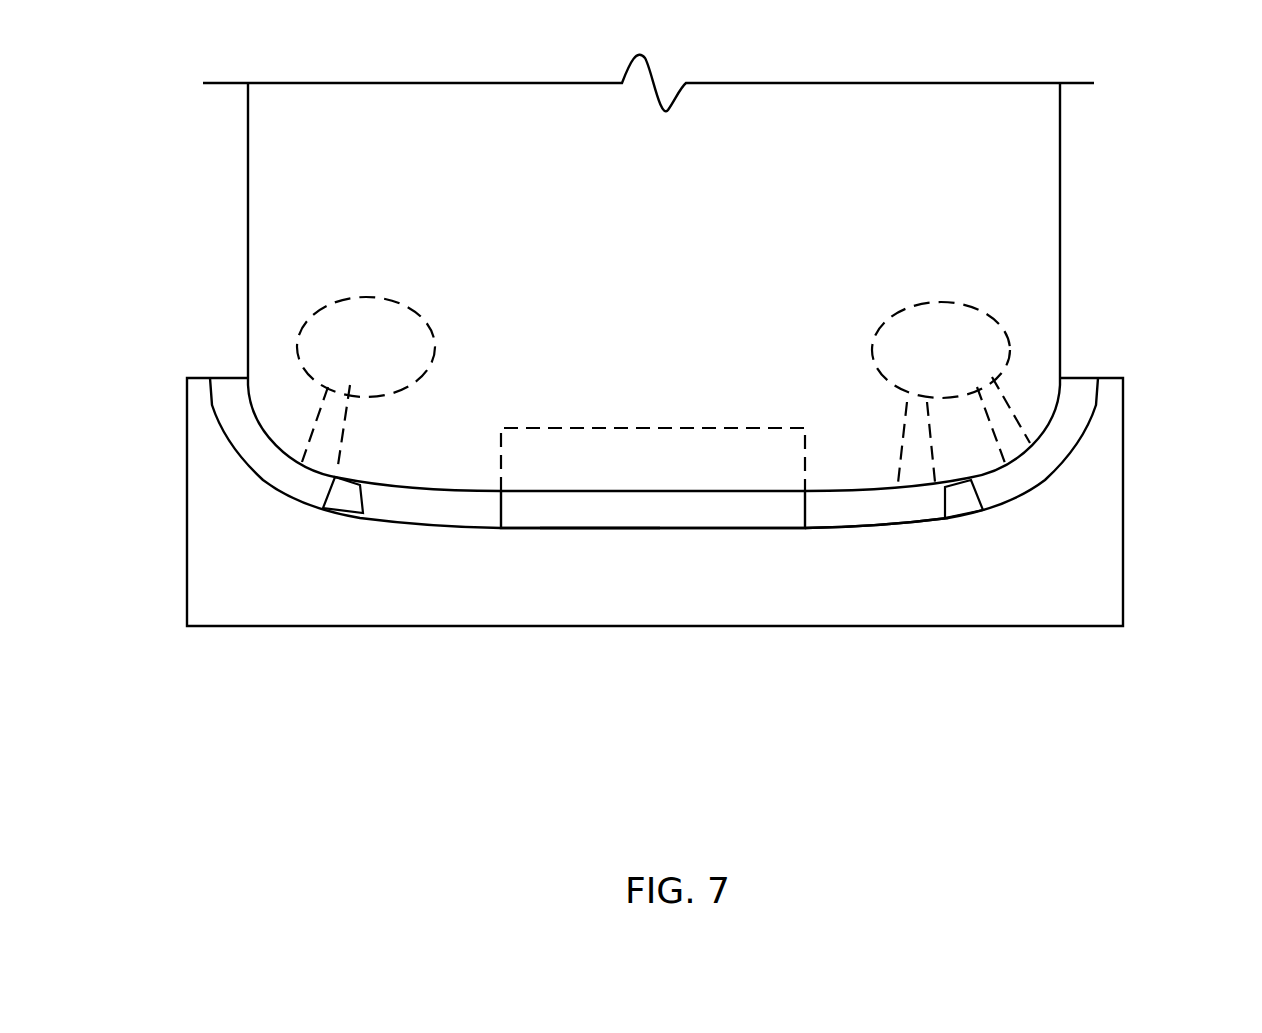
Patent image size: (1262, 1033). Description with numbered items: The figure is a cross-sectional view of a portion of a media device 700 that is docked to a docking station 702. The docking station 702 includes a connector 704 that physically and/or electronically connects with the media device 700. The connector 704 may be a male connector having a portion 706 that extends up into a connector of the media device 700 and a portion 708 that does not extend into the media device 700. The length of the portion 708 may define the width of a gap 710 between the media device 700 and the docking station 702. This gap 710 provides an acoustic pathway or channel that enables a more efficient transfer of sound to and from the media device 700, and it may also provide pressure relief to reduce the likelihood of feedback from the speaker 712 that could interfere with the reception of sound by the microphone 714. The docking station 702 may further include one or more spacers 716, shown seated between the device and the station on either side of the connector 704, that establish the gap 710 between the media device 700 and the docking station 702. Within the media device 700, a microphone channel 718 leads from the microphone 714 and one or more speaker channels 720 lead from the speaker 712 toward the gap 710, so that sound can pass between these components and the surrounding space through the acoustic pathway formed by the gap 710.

The media device 700 is at (1050, 175).
The docking station 702 is at (1115, 510).
The connector 704 is at (705, 523).
The portion 706 is at (627, 433).
The portion 708 is at (603, 522).
The gap 710 is at (872, 522).
The speaker 712 is at (888, 345).
The microphone 714 is at (417, 345).
The spacers 716 is at (342, 512).
The microphone channel 718 is at (338, 432).
The speaker channels 720 is at (997, 435).